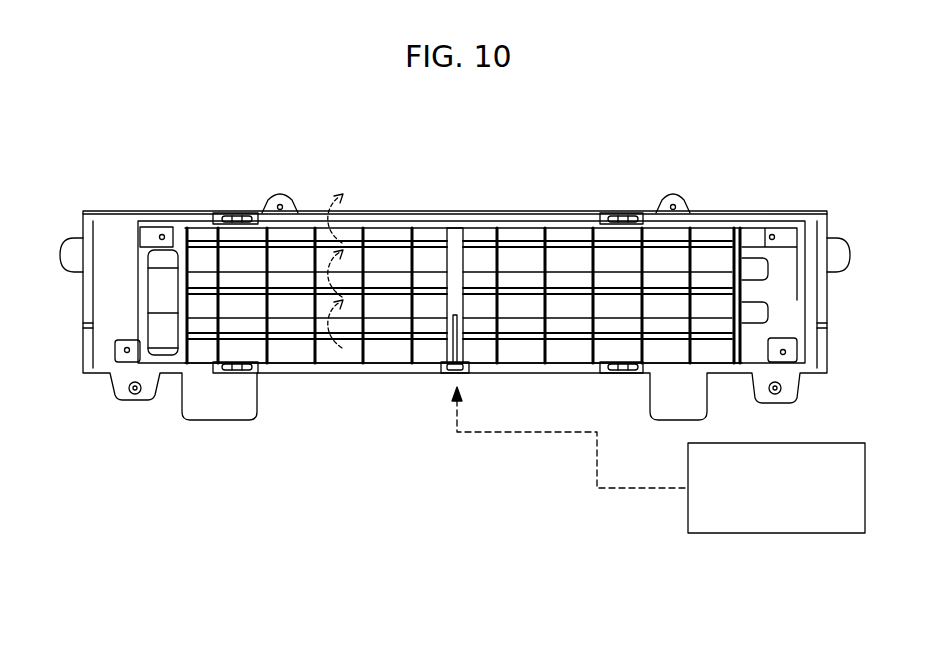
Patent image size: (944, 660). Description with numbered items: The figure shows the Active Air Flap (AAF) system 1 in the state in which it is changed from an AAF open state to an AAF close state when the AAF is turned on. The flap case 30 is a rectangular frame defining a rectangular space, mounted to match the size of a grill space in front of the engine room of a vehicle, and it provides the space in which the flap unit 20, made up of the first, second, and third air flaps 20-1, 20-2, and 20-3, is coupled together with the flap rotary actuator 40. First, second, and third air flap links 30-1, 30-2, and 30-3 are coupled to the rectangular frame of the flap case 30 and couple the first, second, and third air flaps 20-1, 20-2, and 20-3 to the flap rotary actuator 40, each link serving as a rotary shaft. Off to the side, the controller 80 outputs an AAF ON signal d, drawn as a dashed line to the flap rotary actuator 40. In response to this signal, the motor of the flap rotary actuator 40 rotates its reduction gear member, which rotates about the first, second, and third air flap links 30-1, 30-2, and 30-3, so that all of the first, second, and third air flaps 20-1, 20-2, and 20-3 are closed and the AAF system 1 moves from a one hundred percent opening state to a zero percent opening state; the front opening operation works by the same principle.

The Active Air Flap (AAF) system 1 is at (477, 492).
The flap unit 20 is at (102, 441).
The first air flap 20-1 is at (208, 235).
The second air flap 20-2 is at (243, 273).
The third air flap 20-3 is at (260, 317).
The flap case 30 is at (538, 212).
The first air flap link 30-1 is at (712, 242).
The second air flap link 30-2 is at (720, 292).
The third air flap link 30-3 is at (718, 333).
The flap rotary actuator 40 is at (447, 367).
The controller 80 is at (755, 533).
The AAF ON signal d is at (570, 456).